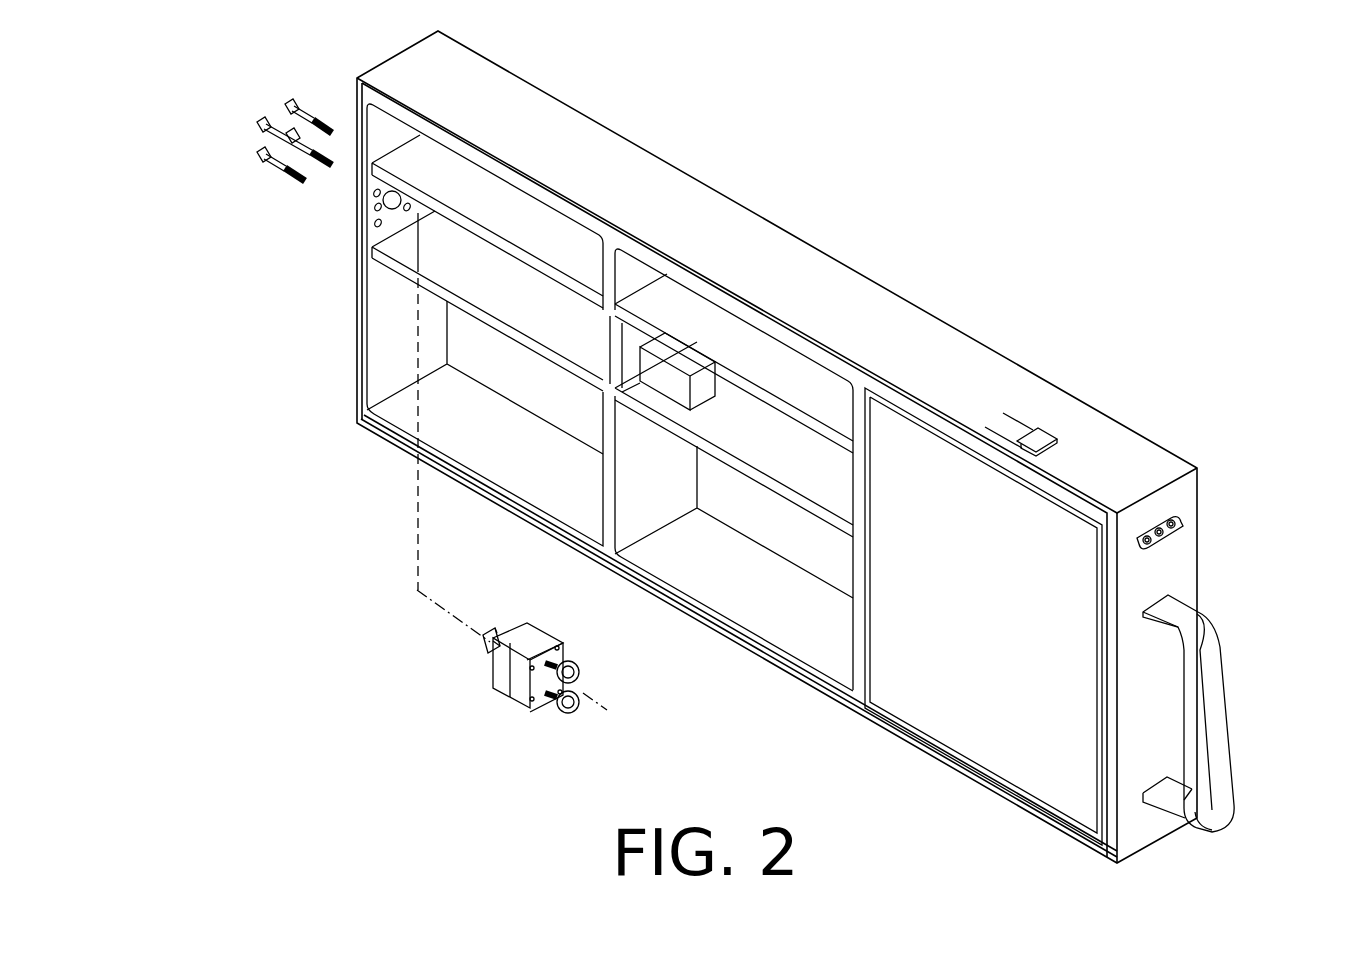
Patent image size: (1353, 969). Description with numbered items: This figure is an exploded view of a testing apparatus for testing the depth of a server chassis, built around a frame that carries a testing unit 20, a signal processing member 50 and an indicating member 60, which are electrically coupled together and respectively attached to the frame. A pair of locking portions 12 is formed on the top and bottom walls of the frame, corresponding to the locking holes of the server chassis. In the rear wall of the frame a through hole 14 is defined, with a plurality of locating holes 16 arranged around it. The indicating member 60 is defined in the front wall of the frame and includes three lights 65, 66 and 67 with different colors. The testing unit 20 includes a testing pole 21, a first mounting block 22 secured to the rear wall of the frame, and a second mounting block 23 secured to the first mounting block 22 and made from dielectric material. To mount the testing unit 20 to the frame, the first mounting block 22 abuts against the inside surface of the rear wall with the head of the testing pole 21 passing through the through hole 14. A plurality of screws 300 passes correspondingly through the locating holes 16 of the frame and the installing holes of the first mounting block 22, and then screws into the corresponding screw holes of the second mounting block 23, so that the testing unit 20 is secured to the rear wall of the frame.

The locking portion 12 is at (1032, 440).
The through hole 14 is at (378, 207).
The locating hole 16 is at (377, 225).
The testing unit 20 is at (502, 651).
The testing pole 21 is at (487, 648).
The first mounting block 22 is at (518, 638).
The second mounting block 23 is at (545, 642).
The signal processing member 50 is at (672, 375).
The indicating member 60 is at (1240, 541).
The light 65 is at (1177, 523).
The light 66 is at (1163, 536).
The light 67 is at (1147, 545).
The screw 300 is at (290, 105).